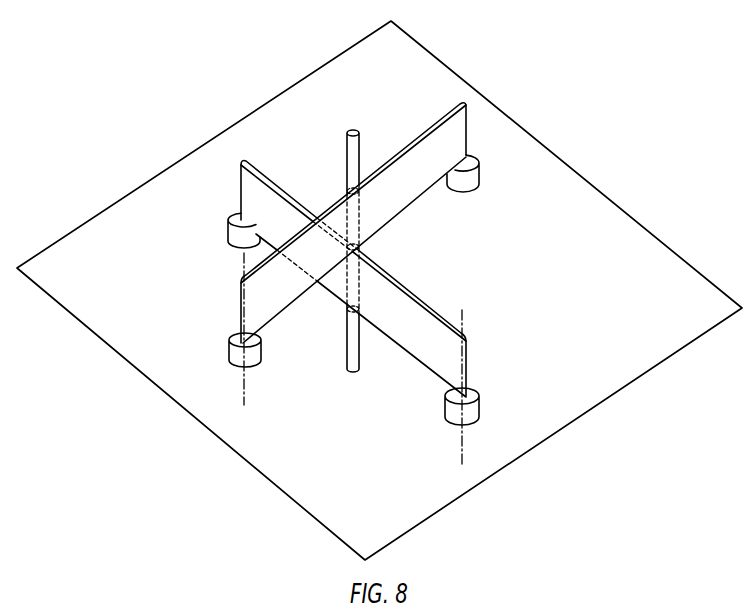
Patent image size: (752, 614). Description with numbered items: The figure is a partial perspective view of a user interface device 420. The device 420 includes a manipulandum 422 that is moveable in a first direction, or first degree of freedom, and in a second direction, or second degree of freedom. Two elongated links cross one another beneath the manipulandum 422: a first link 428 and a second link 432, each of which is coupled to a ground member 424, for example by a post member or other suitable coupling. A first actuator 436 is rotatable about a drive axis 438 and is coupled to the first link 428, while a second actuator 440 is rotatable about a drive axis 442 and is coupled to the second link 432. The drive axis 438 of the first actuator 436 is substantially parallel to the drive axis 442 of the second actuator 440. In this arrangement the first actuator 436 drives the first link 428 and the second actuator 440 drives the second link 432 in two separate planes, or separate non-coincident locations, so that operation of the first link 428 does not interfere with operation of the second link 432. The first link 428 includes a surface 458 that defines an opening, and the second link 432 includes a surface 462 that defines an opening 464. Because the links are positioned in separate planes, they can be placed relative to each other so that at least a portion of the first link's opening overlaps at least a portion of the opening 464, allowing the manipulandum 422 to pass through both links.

The user interface device 420 is at (588, 115).
The manipulandum 422 is at (347, 153).
The ground member 424 is at (429, 72).
The first link 428 is at (410, 191).
The second link 432 is at (239, 198).
The first actuator 436 is at (231, 355).
The drive axis 438 is at (249, 378).
The second actuator 440 is at (478, 407).
The drive axis 442 is at (464, 319).
The surface 458 is at (334, 206).
The surface 462 is at (423, 302).
The opening 464 is at (357, 236).